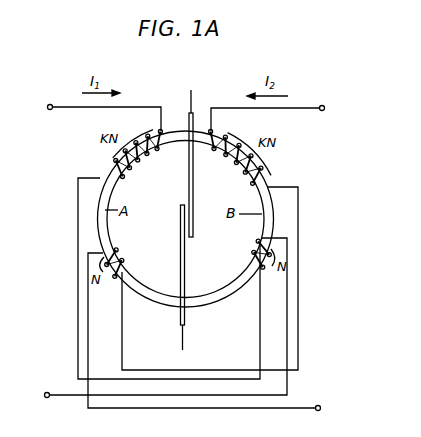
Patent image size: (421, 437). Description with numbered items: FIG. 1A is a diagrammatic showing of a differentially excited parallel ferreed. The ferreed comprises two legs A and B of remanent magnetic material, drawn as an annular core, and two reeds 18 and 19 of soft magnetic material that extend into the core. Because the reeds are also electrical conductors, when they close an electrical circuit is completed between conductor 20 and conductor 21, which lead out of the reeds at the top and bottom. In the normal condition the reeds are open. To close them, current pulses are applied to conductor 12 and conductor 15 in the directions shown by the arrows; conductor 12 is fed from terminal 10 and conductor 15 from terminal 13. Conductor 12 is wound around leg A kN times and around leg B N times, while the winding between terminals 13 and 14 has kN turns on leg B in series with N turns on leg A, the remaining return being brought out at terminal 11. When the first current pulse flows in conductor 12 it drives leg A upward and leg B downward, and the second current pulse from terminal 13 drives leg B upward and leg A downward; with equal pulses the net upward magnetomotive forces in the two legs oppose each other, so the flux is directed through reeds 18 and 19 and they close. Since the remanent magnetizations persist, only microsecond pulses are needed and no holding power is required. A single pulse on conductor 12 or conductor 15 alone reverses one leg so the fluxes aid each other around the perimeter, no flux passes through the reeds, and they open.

The first input terminal 10 is at (49, 104).
The second terminal 11 is at (44, 394).
The conductor 12 is at (145, 106).
The terminal 13 is at (324, 106).
The terminal 14 is at (321, 407).
The conductor 15 is at (224, 107).
The reed 18 is at (188, 178).
The reed 19 is at (186, 258).
The conductor 20 is at (194, 97).
The conductor 21 is at (184, 340).